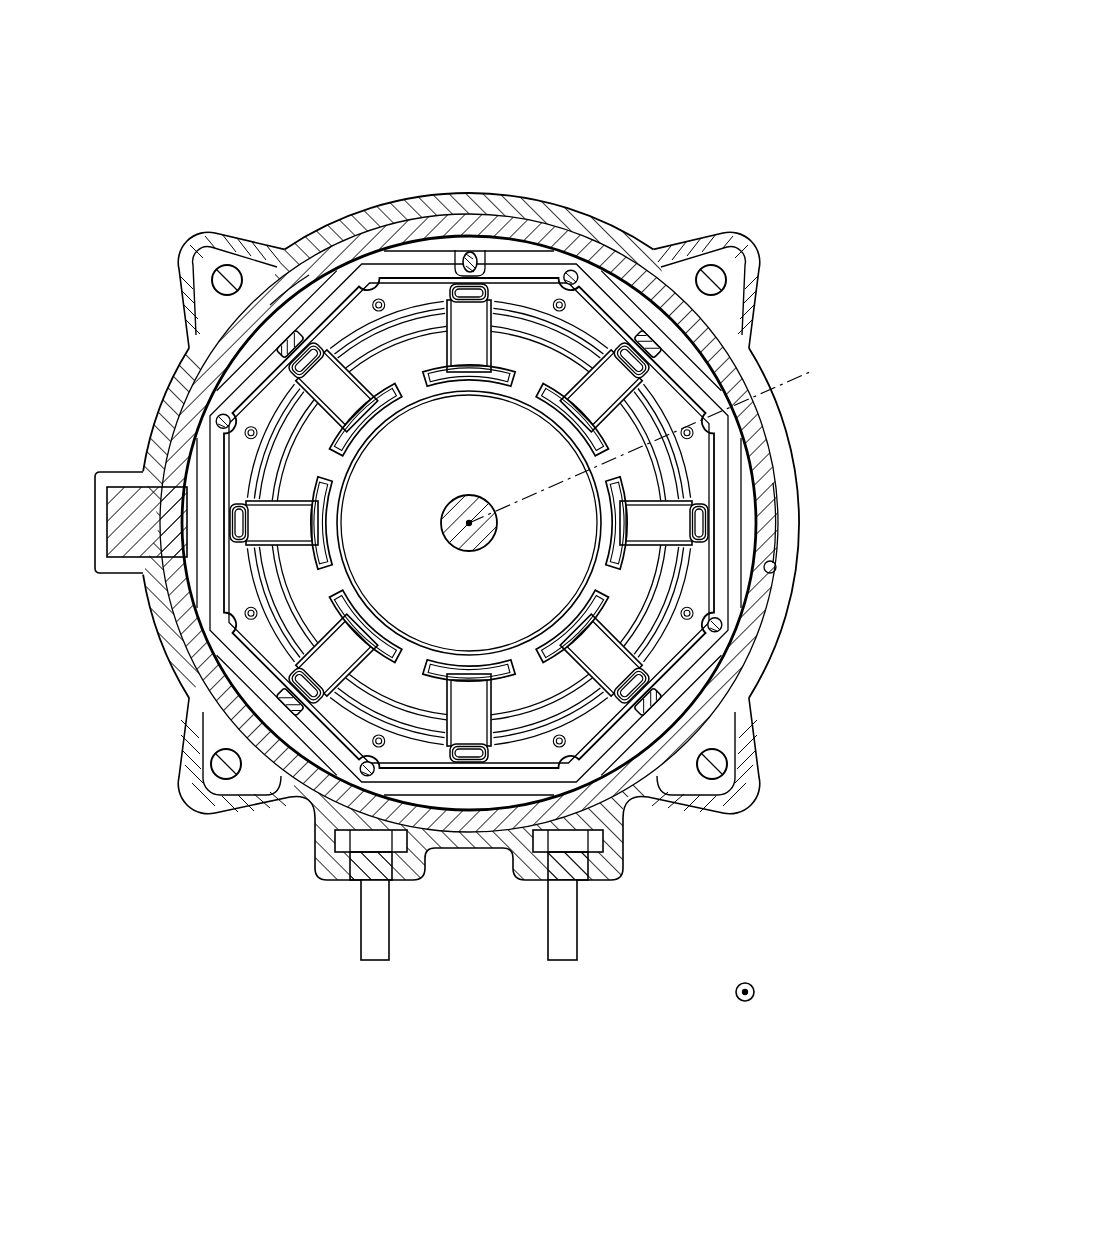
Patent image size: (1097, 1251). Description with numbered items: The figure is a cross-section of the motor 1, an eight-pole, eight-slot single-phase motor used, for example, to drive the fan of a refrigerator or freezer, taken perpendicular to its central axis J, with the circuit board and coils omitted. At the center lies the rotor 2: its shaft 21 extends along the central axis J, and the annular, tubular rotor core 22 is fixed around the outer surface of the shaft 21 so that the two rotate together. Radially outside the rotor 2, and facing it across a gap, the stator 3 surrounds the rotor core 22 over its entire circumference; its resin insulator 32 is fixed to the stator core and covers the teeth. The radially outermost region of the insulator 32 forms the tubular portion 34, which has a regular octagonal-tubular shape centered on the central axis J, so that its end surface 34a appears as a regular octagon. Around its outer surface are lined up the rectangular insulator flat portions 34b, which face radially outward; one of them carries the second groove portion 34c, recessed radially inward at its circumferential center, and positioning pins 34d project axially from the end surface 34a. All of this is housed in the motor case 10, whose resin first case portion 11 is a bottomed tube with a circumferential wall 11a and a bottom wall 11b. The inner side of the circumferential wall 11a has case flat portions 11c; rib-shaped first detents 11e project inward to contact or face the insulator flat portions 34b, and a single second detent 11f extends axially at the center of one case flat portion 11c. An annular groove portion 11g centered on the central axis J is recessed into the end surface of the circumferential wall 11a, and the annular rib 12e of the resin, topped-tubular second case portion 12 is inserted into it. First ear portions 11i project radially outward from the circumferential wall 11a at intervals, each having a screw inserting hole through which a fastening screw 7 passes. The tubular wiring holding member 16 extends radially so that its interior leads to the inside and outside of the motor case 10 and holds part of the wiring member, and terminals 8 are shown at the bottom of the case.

The motor 1 is at (779, 96).
The rotor 2 is at (594, 574).
The stator 3 is at (748, 538).
The fastening screw 7 is at (714, 270).
The terminal 8 is at (375, 962).
The motor case 10 is at (524, 194).
The first case portion 11 is at (569, 207).
The circumferential wall 11a is at (787, 485).
The bottom wall 11b is at (570, 665).
The case flat portion 11c is at (300, 330).
The first detent 11e is at (233, 265).
The second detent 11f is at (490, 263).
The annular groove portion 11g is at (777, 569).
The first ear portion 11i is at (748, 255).
The second case portion 12 is at (769, 434).
The annular rib 12e is at (772, 520).
The wiring holding member 16 is at (130, 500).
The shaft 21 is at (476, 552).
The rotor core 22 is at (515, 617).
The insulator 32 is at (343, 720).
The tubular portion 34 is at (383, 259).
The end surface 34a is at (330, 280).
The insulator flat portion 34b is at (407, 267).
The second groove portion 34c is at (470, 252).
The positioning pin 34d is at (575, 270).
The central axis J is at (650, 438).